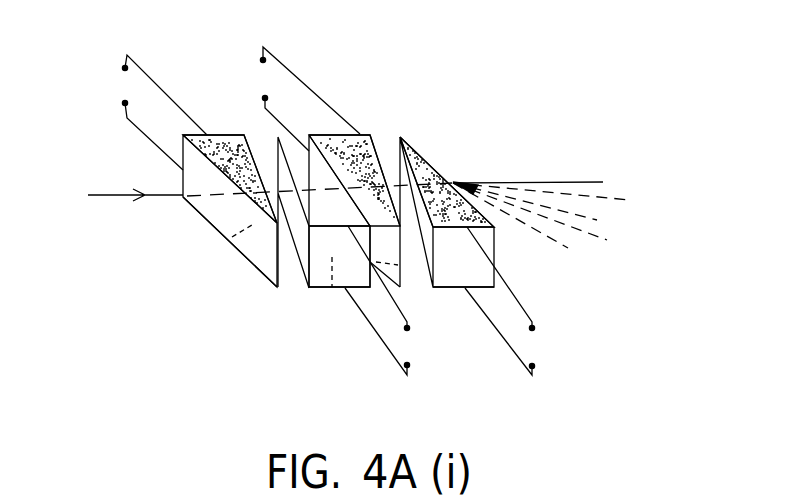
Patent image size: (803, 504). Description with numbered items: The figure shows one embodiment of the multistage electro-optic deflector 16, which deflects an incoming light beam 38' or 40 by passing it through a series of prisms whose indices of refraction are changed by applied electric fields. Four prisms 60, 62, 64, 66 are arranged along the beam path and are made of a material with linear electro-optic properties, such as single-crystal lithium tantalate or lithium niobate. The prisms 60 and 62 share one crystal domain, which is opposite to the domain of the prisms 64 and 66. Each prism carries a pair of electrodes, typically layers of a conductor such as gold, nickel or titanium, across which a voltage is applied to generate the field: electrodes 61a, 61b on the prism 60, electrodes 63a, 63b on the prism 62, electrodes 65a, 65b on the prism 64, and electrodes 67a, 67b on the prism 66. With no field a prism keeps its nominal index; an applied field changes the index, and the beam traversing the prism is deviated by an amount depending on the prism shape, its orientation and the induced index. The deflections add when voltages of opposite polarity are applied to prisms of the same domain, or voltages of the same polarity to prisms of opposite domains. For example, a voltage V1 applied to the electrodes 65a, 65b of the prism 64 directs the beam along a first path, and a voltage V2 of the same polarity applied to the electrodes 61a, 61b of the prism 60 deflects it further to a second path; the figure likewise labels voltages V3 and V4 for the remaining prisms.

The multistage E-O deflector 16 is at (158, 318).
The light beam 38' is at (108, 224).
The light beam 40 is at (108, 224).
The prism 60 is at (222, 135).
The electrode 61a is at (212, 135).
The electrode 61b is at (228, 240).
The prism 62 is at (364, 135).
The top electrode surface of second prism 63a is at (367, 144).
The bottom surface of second prism 63b is at (402, 262).
The prism 64 is at (316, 288).
The electrode 65a is at (310, 222).
The electrode 65b is at (332, 287).
The prism 66 is at (458, 278).
The top electrode surface of third prism 67a is at (435, 173).
The bottom surface of third prism 67b is at (447, 288).
The voltage V1 is at (391, 300).
The voltage V2 is at (148, 112).
The voltage applied to prism 66 V3 is at (514, 301).
The voltage applied to prism 62 V4 is at (296, 99).